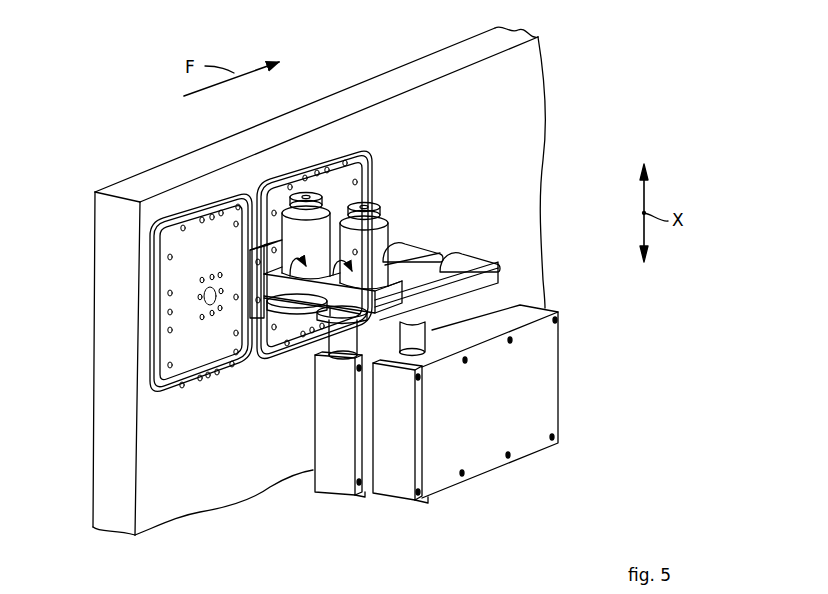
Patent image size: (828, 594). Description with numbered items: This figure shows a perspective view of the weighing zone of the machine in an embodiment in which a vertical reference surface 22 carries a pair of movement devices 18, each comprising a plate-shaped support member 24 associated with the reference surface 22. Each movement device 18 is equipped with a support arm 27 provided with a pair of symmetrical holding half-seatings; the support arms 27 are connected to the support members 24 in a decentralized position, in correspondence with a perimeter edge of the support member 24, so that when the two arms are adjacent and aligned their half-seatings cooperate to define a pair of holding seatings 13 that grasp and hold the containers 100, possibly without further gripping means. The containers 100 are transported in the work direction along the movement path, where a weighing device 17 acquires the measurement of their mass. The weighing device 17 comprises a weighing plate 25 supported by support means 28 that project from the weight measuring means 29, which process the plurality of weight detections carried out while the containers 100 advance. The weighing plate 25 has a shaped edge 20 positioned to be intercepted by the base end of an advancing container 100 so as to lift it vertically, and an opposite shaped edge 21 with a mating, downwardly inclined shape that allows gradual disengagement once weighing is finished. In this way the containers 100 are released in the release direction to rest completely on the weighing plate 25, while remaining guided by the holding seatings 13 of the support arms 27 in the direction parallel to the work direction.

The holding seating 13 is at (333, 275).
The weighing device 17 is at (330, 543).
The movement device 18 is at (192, 190).
The shaped edge 20 is at (278, 308).
The shaped edge 21 is at (440, 256).
The reference surface 22 is at (527, 100).
The support member 24 is at (172, 265).
The weighing plate 25 is at (409, 243).
The support arm 27 is at (272, 283).
The support mean 28 is at (413, 347).
The weight measuring means 29 is at (329, 473).
The container 100 is at (332, 195).